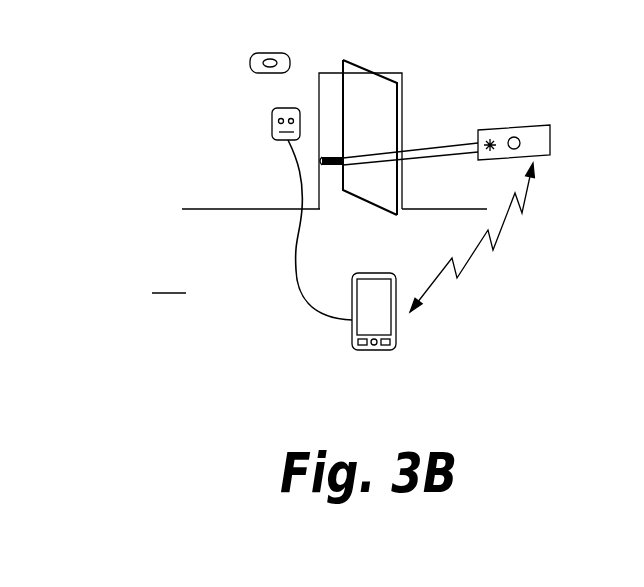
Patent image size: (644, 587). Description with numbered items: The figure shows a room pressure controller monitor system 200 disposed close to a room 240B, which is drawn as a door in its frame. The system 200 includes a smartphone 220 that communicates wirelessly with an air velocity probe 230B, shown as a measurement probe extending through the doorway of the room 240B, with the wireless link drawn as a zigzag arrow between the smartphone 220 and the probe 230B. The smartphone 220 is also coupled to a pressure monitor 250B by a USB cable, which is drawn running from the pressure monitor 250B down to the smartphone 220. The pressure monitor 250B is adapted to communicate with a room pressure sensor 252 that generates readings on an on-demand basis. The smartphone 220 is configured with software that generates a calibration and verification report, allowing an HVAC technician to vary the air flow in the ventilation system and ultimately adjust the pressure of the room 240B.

The room pressure controller monitor system 200 is at (169, 278).
The smartphone 220 is at (372, 351).
The air velocity probe 230B is at (550, 140).
The room 240B is at (418, 102).
The pressure monitor 250B is at (272, 123).
The room pressure sensor 252 is at (250, 63).